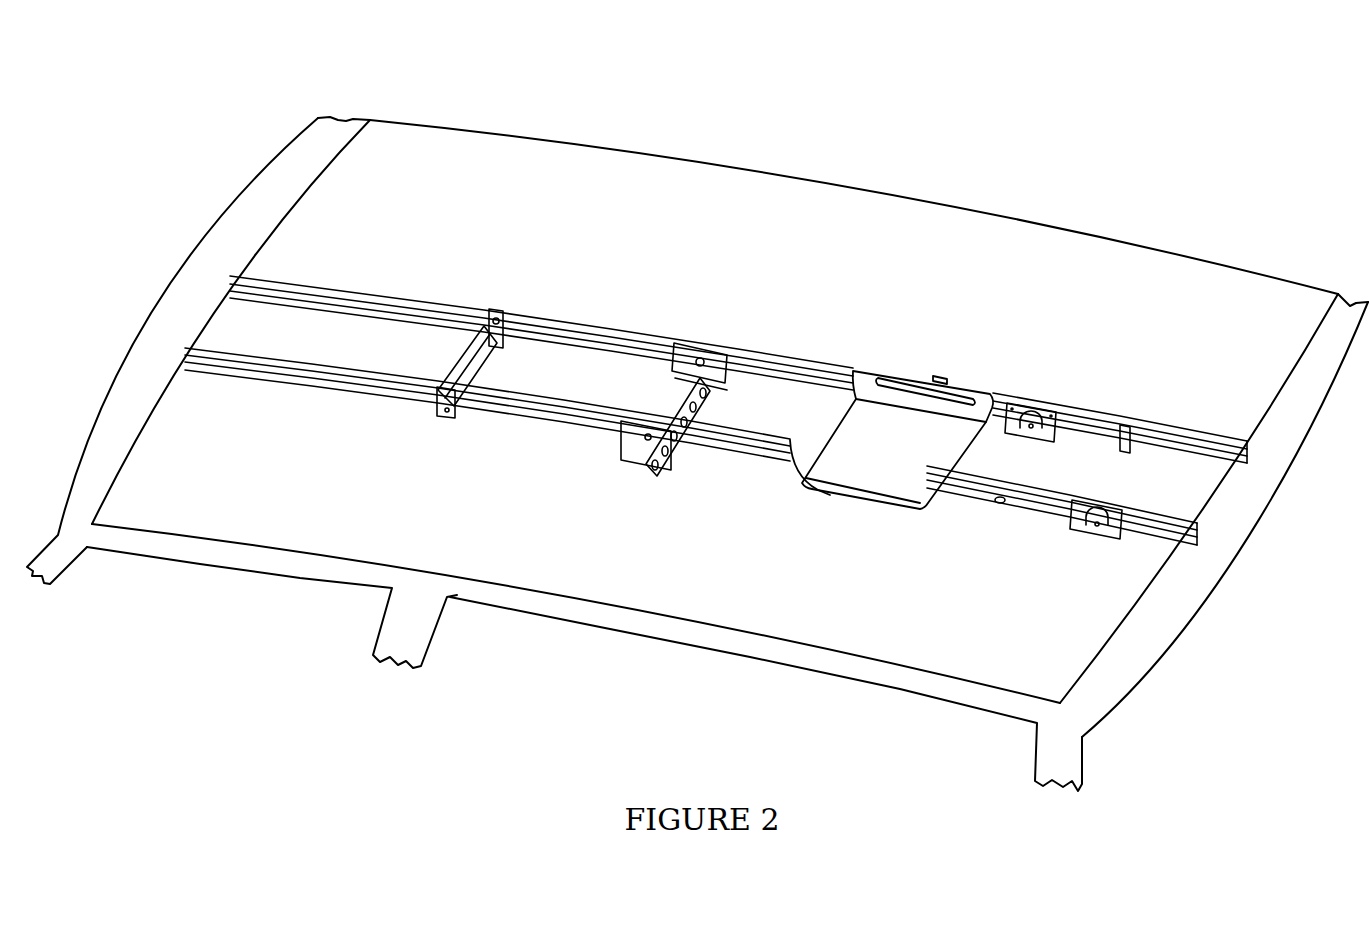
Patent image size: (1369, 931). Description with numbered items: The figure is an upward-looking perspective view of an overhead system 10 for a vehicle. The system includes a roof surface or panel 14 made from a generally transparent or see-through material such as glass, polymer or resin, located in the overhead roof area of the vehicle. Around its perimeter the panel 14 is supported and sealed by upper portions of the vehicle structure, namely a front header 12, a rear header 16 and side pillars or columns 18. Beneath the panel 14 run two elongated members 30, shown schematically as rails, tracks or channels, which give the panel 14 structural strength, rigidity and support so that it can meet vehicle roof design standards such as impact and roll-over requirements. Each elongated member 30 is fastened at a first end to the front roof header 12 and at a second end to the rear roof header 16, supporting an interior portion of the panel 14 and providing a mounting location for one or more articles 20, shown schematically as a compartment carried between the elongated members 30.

The overhead system 10 is at (830, 117).
The front header 12 is at (235, 227).
The roof panel 14 is at (530, 168).
The rear header 16 is at (1248, 492).
The side pillars 18 is at (422, 584).
The article 20 is at (967, 368).
The elongated members 30 is at (553, 313).